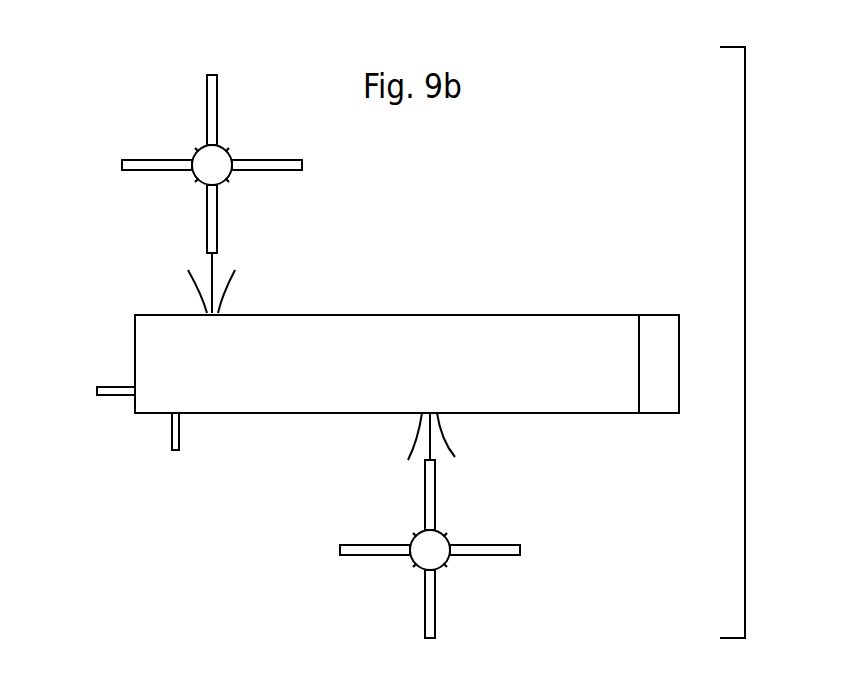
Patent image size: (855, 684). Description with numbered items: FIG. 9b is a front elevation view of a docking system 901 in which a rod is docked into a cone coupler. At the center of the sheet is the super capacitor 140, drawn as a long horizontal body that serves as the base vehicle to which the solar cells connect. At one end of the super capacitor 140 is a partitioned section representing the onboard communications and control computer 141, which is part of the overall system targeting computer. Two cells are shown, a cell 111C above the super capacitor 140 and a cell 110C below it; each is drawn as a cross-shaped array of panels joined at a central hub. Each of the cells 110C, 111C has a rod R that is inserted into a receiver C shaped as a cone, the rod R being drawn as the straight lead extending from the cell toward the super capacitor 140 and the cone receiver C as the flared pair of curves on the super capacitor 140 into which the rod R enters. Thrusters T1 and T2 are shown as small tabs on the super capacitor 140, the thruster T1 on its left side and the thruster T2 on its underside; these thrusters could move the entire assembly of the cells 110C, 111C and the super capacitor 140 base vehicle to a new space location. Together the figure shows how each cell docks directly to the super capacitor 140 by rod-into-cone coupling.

The circuit arrangement 901 is at (745, 283).
The super capacitor 140 is at (530, 408).
The onboard communications and control computer 141 is at (658, 332).
The cell 111C is at (157, 163).
The cell 110C is at (480, 555).
The thruster T1 is at (98, 396).
The thruster T2 is at (177, 443).
The rod R is at (210, 273).
The receiver C is at (225, 285).